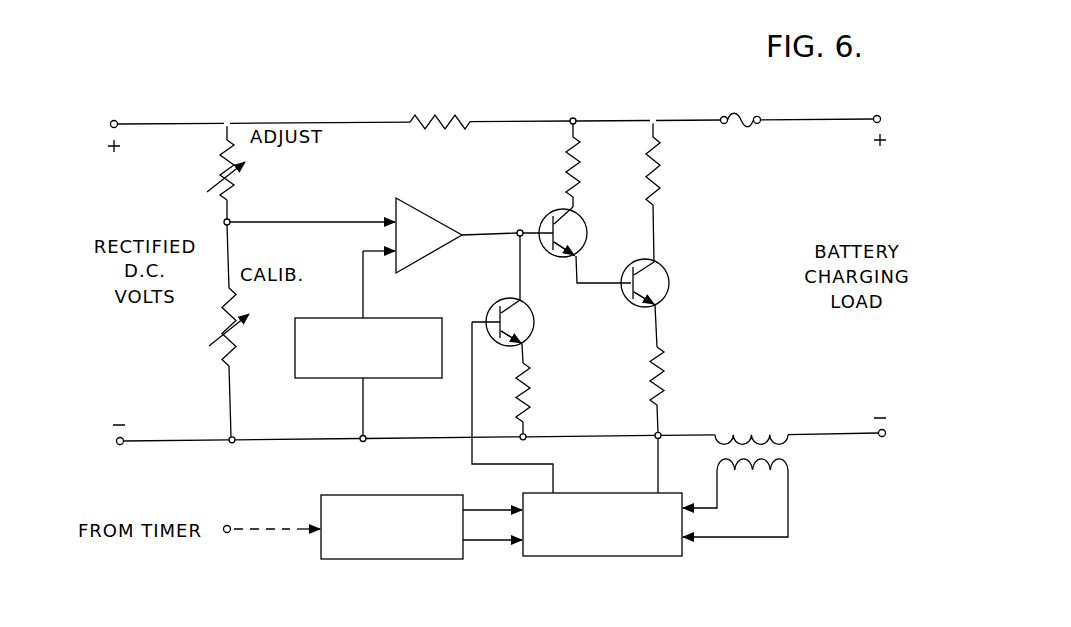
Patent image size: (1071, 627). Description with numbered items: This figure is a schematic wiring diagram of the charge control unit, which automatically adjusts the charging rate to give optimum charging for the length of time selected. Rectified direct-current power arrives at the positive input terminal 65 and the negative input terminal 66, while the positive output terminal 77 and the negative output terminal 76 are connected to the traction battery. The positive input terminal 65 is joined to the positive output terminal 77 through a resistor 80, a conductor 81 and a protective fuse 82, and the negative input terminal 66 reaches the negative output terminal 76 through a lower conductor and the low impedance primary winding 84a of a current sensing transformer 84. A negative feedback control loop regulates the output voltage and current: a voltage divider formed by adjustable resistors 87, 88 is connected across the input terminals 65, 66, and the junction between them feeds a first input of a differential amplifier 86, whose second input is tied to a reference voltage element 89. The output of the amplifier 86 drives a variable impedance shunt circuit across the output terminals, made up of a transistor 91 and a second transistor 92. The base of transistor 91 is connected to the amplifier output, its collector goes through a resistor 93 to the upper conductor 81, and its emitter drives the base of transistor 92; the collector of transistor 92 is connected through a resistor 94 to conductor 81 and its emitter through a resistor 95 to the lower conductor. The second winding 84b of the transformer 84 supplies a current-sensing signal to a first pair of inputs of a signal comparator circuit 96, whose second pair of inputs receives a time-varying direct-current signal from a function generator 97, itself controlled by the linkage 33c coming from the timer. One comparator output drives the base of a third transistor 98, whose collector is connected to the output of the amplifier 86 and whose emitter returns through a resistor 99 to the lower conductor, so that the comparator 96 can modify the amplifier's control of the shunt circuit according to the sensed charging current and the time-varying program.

The positive input terminal 65 is at (115, 120).
The negative input terminal 66 is at (120, 444).
The negative output terminal 76 is at (882, 437).
The positive output terminal 77 is at (880, 116).
The resistor 80 is at (448, 116).
The conductor 81 is at (608, 118).
The protective fuse 82 is at (740, 112).
The current sensing transformer 84 is at (759, 468).
The primary winding 84a is at (755, 434).
The second winding 84b is at (744, 467).
The differential amplifier 86 is at (433, 217).
The adjustable resistor 87 is at (237, 184).
The adjustable resistor 88 is at (237, 347).
The reference voltage element 89 is at (338, 379).
The transistor 91 is at (548, 216).
The second transistor 92 is at (668, 283).
The resistor 93 is at (566, 165).
The resistor 94 is at (660, 163).
The resistor 95 is at (665, 382).
The signal comparator circuit 96 is at (637, 556).
The function generator 97 is at (410, 560).
The third transistor 98 is at (534, 324).
The resistor 99 is at (531, 400).
The linkage 33c is at (286, 531).